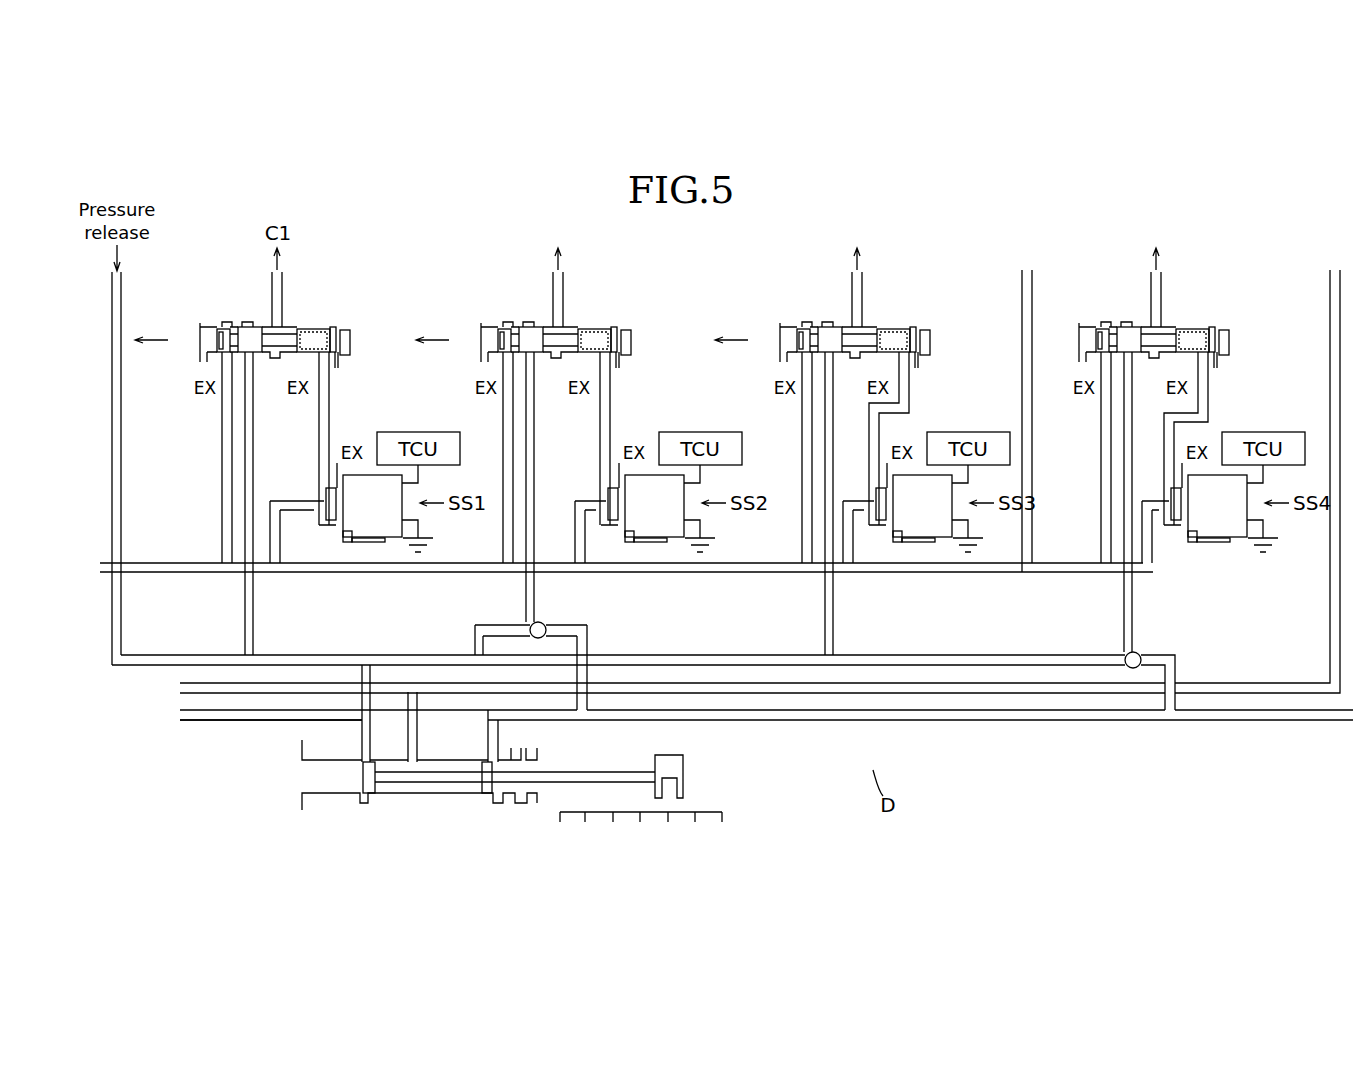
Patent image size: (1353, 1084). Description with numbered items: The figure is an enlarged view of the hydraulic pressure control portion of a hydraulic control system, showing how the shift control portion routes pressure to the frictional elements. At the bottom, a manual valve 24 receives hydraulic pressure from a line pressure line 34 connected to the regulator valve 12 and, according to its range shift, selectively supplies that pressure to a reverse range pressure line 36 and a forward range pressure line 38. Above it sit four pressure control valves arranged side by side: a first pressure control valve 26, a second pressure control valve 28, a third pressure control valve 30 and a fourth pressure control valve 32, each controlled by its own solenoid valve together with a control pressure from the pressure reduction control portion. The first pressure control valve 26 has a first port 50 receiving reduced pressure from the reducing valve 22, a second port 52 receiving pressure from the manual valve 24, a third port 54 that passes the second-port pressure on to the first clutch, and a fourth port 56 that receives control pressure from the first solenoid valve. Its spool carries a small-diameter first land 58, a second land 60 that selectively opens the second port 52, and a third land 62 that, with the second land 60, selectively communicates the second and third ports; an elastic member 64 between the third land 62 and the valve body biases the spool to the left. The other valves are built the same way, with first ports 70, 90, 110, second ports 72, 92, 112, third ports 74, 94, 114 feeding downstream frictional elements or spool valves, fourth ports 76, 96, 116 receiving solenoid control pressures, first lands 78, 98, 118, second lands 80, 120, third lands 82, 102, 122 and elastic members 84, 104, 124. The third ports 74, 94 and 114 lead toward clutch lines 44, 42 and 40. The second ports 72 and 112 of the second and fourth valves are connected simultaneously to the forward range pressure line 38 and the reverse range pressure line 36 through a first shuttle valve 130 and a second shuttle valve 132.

The regulator valve 12 is at (169, 689).
The reducing valve 22 is at (91, 570).
The manual valve 24 is at (749, 782).
The first pressure control valve 26 is at (200, 340).
The second pressure control valve 28 is at (510, 338).
The third pressure control valve 30 is at (809, 338).
The fourth pressure control valve 32 is at (1108, 338).
The line pressure line 34 is at (302, 688).
The reverse range pressure line 36 is at (243, 716).
The forward range pressure line 38 is at (362, 743).
The clutch passage 40 is at (1170, 274).
The clutch passage 42 is at (868, 274).
The clutch passage 44 is at (559, 274).
The first port 50 is at (226, 360).
The second port 52 is at (250, 360).
The third port 54 is at (283, 325).
The fourth port 56 is at (324, 365).
The first land 58 is at (218, 331).
The second land 60 is at (247, 327).
The third land 62 is at (312, 330).
The elastic member 64 is at (331, 330).
The first port 70 is at (484, 457).
The second port 72 is at (551, 487).
The third port 74 is at (573, 299).
The fourth port 76 is at (628, 373).
The first land 78 is at (487, 321).
The second land 80 is at (525, 319).
The third land 82 is at (597, 320).
The elastic member 84 is at (630, 328).
The first port 90 is at (783, 457).
The second port 92 is at (850, 503).
The third port 94 is at (872, 299).
The fourth port 96 is at (927, 373).
The first land 98 is at (786, 321).
The third land 102 is at (900, 320).
The elastic member 104 is at (934, 328).
The first port 110 is at (1075, 457).
The second port 112 is at (1146, 502).
The third port 114 is at (1174, 299).
The fourth port 116 is at (1230, 373).
The first land 118 is at (1078, 319).
The second land 120 is at (1118, 319).
The third land 122 is at (1201, 314).
The elastic member 124 is at (1233, 329).
The first shuttle valve 130 is at (548, 623).
The second shuttle valve 132 is at (1141, 655).